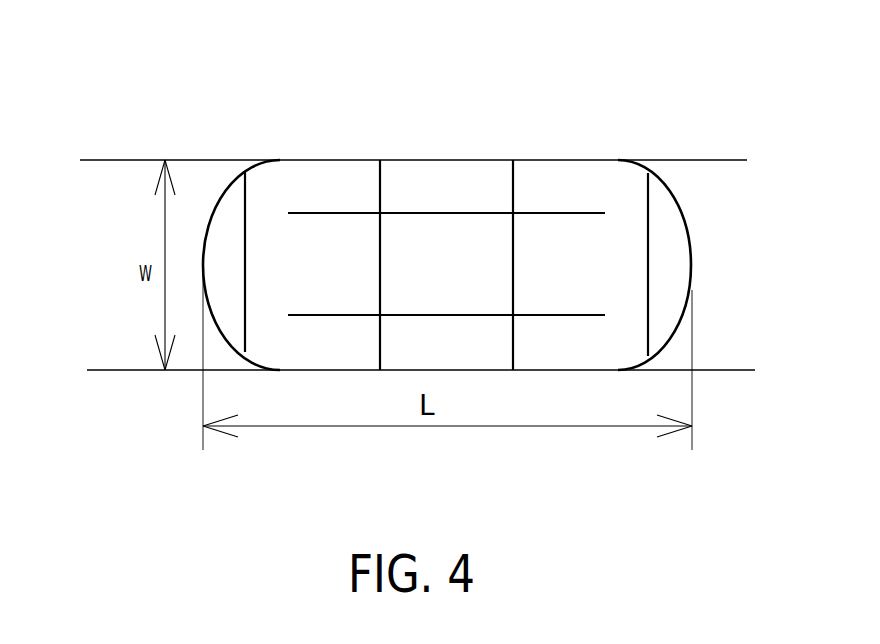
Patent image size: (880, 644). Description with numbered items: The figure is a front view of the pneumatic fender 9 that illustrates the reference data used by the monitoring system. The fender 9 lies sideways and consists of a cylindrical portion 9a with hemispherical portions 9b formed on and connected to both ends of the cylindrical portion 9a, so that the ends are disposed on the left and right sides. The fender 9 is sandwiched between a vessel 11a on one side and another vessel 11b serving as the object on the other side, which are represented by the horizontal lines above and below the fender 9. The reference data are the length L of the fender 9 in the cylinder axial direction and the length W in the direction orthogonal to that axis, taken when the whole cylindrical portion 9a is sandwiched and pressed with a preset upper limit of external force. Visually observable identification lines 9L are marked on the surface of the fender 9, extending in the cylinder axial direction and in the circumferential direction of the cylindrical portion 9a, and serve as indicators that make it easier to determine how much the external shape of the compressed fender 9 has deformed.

The pneumatic fender 9 is at (428, 172).
The cylindrical portion 9a is at (536, 188).
The hemispherical portion 9b is at (213, 200).
The identification line 9L is at (344, 212).
The vessel 11a is at (110, 147).
The another vessel 11b is at (112, 382).